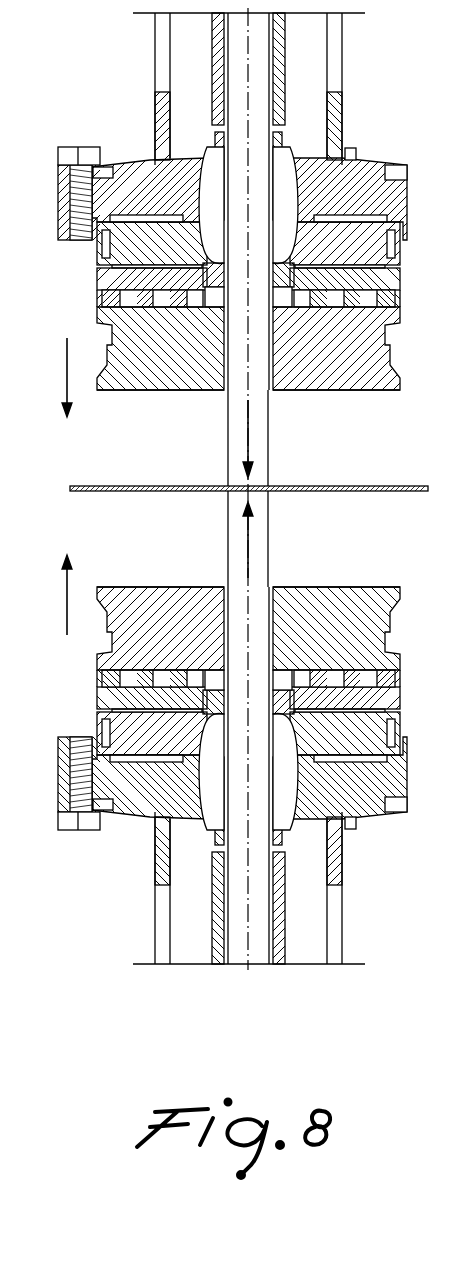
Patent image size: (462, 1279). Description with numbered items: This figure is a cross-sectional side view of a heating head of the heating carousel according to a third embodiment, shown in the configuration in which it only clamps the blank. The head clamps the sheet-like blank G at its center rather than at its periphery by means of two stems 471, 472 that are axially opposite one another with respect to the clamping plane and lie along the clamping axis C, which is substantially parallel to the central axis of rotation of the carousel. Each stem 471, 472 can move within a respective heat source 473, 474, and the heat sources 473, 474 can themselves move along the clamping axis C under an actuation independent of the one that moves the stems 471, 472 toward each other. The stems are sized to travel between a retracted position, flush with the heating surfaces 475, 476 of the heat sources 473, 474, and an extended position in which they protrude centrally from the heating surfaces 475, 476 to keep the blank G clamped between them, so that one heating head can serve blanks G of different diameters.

The clamping axis C is at (248, 42).
The sheet-like blank G is at (417, 486).
The stem 471 is at (262, 525).
The stem 472 is at (258, 450).
The heat source 473 is at (155, 645).
The heat source 474 is at (124, 330).
The heating surface 475 is at (168, 585).
The heating surface 476 is at (177, 392).